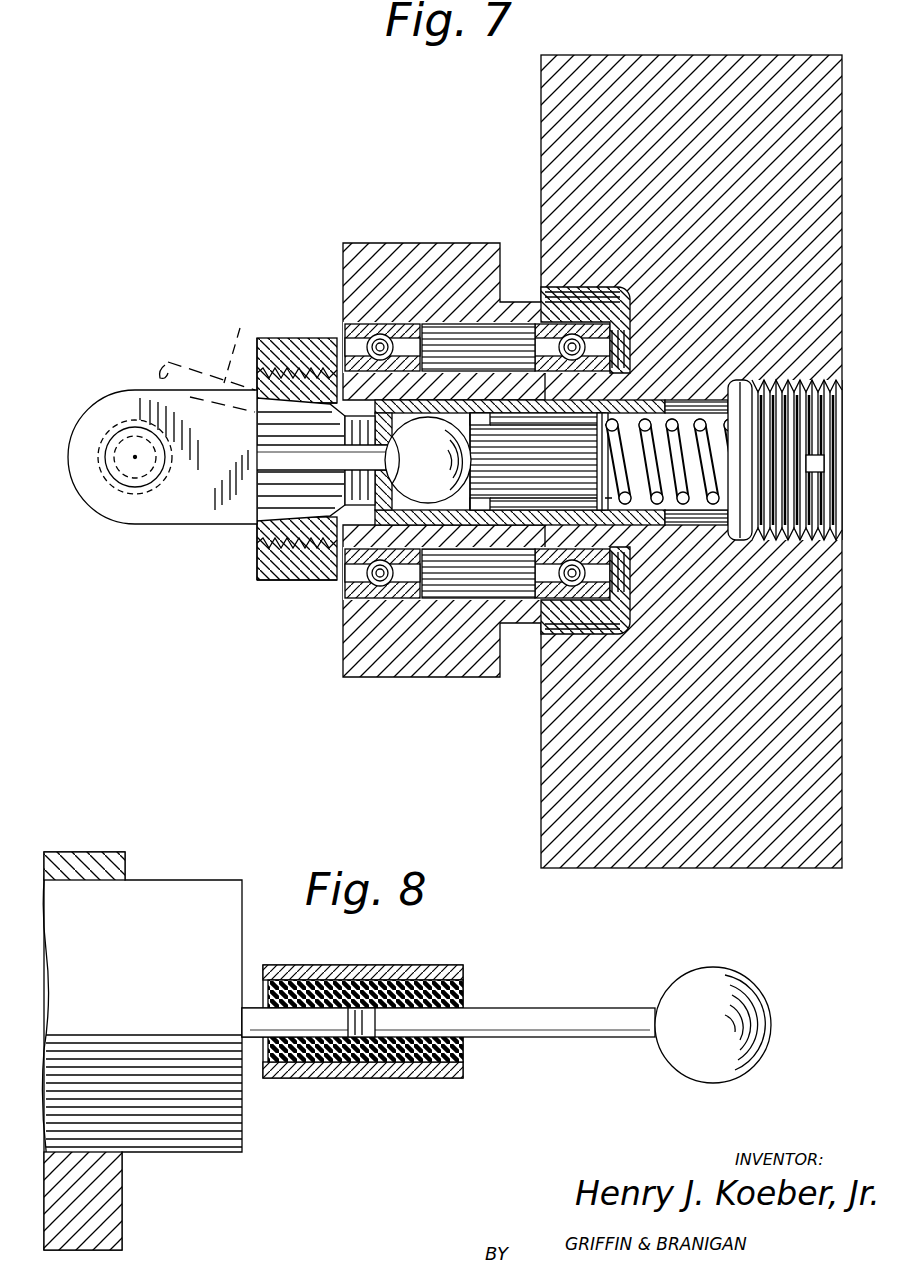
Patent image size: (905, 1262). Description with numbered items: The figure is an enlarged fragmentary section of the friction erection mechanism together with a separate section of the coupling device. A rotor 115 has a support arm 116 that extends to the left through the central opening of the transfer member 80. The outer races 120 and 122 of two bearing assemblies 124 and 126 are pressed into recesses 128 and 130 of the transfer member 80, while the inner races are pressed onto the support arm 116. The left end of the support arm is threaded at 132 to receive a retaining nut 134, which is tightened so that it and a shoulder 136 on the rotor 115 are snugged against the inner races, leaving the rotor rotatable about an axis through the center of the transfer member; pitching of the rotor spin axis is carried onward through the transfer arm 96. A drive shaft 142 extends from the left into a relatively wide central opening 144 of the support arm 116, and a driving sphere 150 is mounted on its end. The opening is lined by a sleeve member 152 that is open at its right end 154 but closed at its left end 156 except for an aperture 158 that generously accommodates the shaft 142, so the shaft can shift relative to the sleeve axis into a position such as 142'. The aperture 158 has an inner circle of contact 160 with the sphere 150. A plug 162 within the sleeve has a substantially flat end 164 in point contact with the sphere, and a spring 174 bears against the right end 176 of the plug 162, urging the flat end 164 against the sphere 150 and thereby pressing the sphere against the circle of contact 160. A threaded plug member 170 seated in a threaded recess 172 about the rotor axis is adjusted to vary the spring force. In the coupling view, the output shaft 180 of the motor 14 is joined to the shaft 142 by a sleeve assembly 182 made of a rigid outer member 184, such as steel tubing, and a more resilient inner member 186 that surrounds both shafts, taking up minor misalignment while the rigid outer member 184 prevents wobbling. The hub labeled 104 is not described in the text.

In FIG. 7, the rotor 115 is at (697, 62).
In FIG. 7, the transfer member 80 is at (360, 615).
In FIG. 7, the outer race 120 is at (350, 330).
In FIG. 7, the bearing assembly 124 is at (345, 590).
In FIG. 7, the recess 128 is at (352, 600).
In FIG. 7, the outer race 122 is at (575, 300).
In FIG. 7, the recess 130 is at (558, 300).
In FIG. 7, the sleeve member 152 is at (468, 518).
In FIG. 7, the support arm 116 is at (265, 530).
In FIG. 7, the threaded portion 132 is at (285, 545).
In FIG. 7, the retaining nut 134 is at (275, 580).
In FIG. 7, the central opening 144 is at (262, 520).
In FIG. 7, the shoulder 136 is at (640, 410).
In FIG. 7, the plug 162 is at (555, 445).
In FIG. 7, the bearing assembly 126 is at (520, 412).
In FIG. 7, the flat end 164 is at (520, 478).
In FIG. 7, the spring 174 is at (608, 442).
In FIG. 7, the right end of plug 176 is at (610, 470).
In FIG. 7, the right end of sleeve 154 is at (660, 520).
In FIG. 7, the threaded plug member 170 is at (828, 430).
In FIG. 7, the threaded recess 172 is at (820, 530).
In FIG. 7, the left end of sleeve 156 is at (385, 490).
In FIG. 7, the circle of contact 160 is at (355, 470).
In FIG. 7, the drive shaft 142 is at (287, 437).
In FIG. 8, the drive shaft 142 is at (448, 1005).
In FIG. 7, the driving sphere 150 is at (462, 440).
In FIG. 8, the driving sphere 150 is at (722, 1022).
In FIG. 7, the aperture 158 is at (385, 445).
In FIG. 7, the transfer arm 96 is at (112, 498).
In FIG. 7, the pivot hub 104 is at (125, 425).
In FIG. 7, the displaced shaft position 142' is at (207, 368).
In FIG. 8, the motor 14 is at (168, 895).
In FIG. 8, the sleeve assembly 182 is at (395, 968).
In FIG. 8, the rigid outer member 184 is at (463, 975).
In FIG. 8, the inner member 186 is at (463, 1052).
In FIG. 8, the output shaft 180 is at (250, 1010).